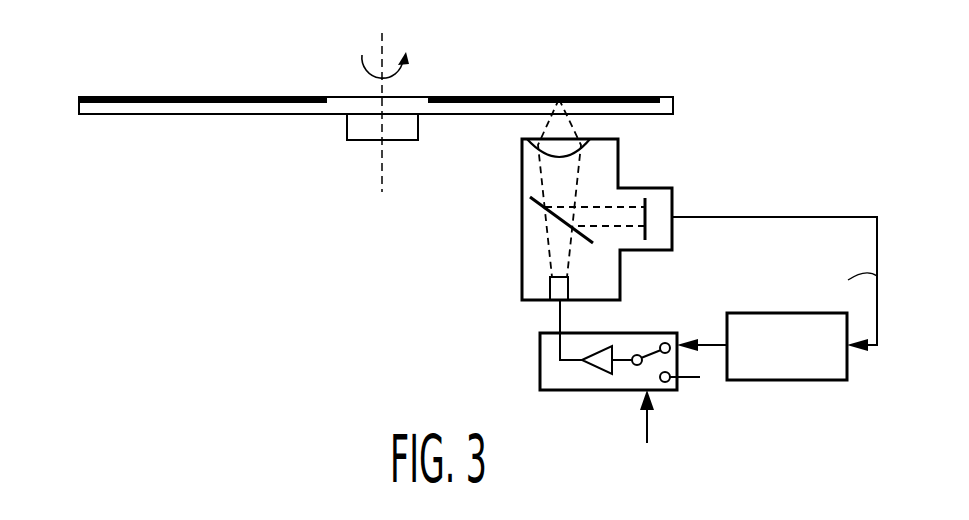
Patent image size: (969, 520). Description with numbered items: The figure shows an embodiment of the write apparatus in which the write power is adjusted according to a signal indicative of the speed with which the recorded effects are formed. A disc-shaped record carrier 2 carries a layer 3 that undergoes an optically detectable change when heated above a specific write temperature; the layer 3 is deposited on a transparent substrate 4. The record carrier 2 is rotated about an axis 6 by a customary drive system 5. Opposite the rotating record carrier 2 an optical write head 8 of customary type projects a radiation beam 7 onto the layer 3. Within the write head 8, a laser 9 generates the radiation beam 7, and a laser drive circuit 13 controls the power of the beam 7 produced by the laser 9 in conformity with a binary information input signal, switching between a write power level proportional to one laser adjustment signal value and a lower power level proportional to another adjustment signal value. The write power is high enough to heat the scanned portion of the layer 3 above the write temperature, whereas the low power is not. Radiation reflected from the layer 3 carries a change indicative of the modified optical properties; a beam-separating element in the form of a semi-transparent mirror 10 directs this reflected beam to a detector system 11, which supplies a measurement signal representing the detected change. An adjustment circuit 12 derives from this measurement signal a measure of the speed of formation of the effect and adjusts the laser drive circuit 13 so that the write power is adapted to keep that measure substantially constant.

The disc-shaped record carrier 2 is at (418, 97).
The layer 3 is at (663, 111).
The transparent substrate 4 is at (235, 115).
The drive system 5 is at (367, 133).
The axis 6 is at (384, 38).
The radiation beam 7 is at (572, 128).
The optical write head 8 is at (522, 262).
The laser 9 is at (550, 288).
The semi-transparent mirror 10 is at (530, 207).
The detector system 11 is at (636, 200).
The adjustment circuit 12 is at (758, 381).
The laser drive circuit 13 is at (578, 383).